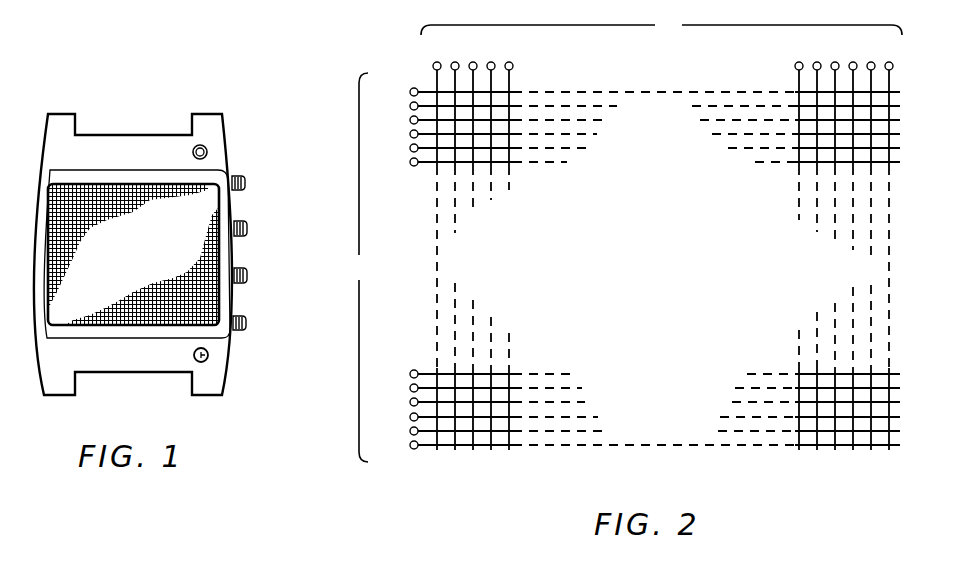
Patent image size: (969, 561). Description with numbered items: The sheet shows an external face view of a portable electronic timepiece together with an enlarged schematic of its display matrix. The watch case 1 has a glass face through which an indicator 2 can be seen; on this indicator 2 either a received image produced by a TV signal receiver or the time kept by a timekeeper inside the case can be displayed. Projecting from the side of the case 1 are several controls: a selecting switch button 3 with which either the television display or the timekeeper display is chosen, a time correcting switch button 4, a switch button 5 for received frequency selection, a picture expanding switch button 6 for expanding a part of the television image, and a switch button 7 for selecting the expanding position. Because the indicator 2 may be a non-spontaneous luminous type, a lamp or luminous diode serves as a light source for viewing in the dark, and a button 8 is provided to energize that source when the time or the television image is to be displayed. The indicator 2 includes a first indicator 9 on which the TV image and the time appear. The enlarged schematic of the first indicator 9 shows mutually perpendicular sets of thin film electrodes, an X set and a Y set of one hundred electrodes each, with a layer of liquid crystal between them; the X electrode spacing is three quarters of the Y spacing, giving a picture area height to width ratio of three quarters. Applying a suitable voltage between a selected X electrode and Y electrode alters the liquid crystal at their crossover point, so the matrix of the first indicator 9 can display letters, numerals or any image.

In FIG. 1, the watch case 1 is at (42, 368).
In FIG. 1, the indicator 2 is at (43, 303).
In FIG. 1, the selecting switch button 3 is at (208, 150).
In FIG. 1, the time correcting switch button 4 is at (246, 182).
In FIG. 1, the switch button for received frequency selection 5 is at (248, 229).
In FIG. 1, the picture expanding switch button 6 is at (248, 276).
In FIG. 1, the switch button for expanding position selection 7 is at (247, 323).
In FIG. 1, the button 8 is at (208, 357).
In FIG. 2, the first indicator 9 is at (845, 279).